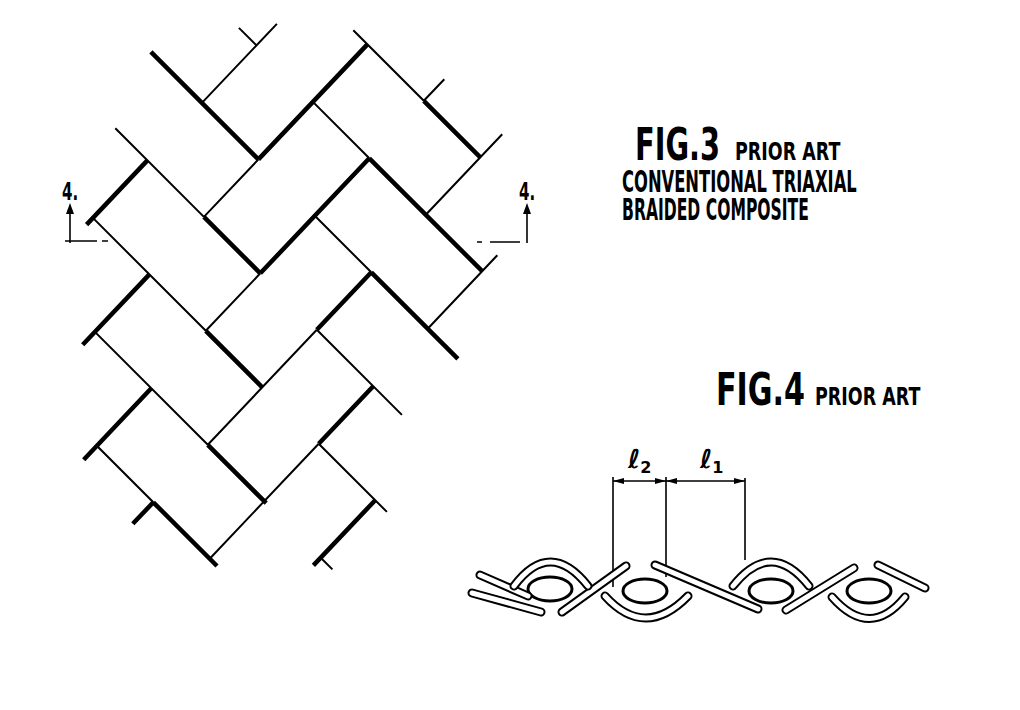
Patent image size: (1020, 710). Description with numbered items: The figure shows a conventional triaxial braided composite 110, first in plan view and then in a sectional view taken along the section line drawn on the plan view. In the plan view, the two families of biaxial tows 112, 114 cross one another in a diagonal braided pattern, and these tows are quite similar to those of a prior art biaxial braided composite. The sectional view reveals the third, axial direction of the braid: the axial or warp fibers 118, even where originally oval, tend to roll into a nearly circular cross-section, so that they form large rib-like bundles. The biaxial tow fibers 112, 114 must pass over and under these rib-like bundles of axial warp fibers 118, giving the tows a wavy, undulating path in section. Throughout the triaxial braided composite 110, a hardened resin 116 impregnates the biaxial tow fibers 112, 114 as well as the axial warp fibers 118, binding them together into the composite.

In FIG. 3, the triaxial braided composite 110 is at (481, 308).
In FIG. 4, the triaxial braided composite 110 is at (783, 553).
In FIG. 4, the tow 112 is at (513, 578).
In FIG. 4, the tow 114 is at (535, 612).
In FIG. 4, the hardened resin 116 is at (677, 587).
In FIG. 4, the axial or warp fibers 118 is at (757, 595).